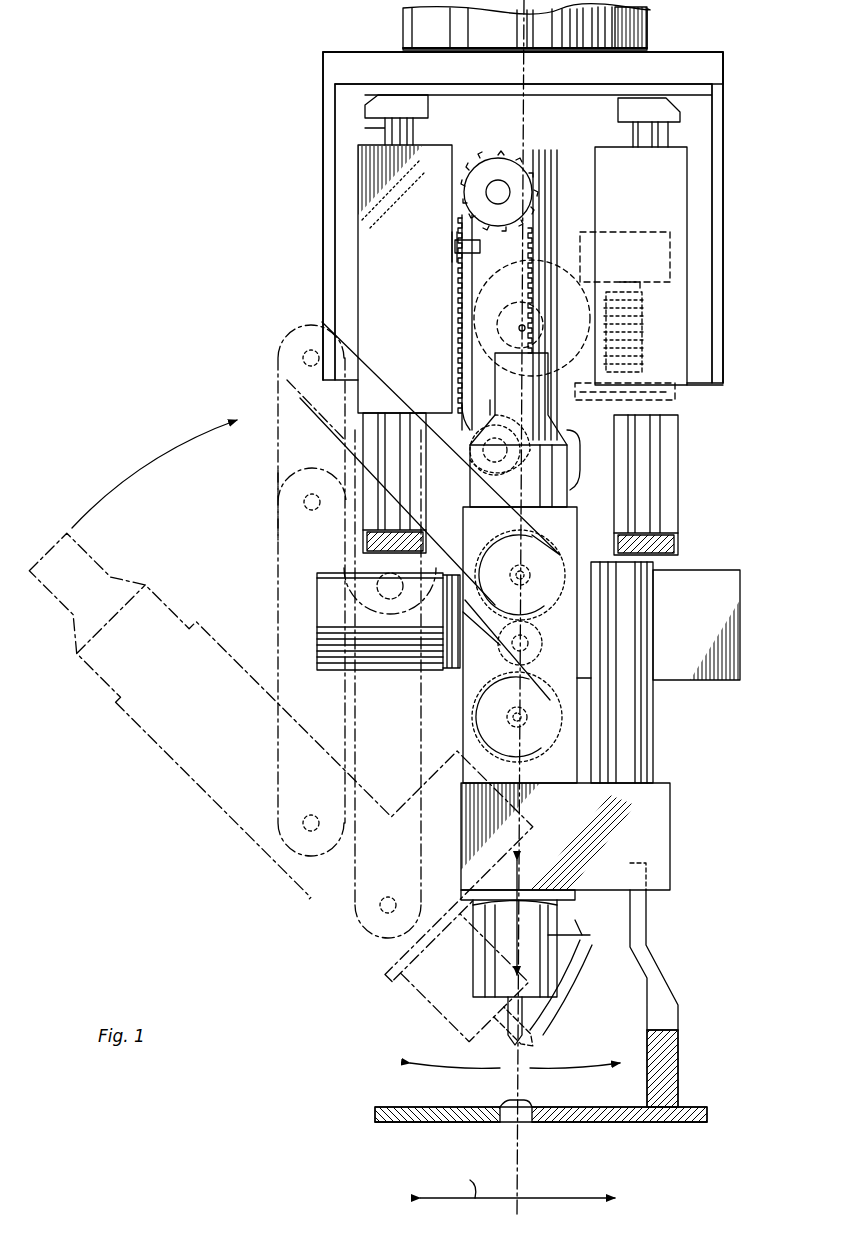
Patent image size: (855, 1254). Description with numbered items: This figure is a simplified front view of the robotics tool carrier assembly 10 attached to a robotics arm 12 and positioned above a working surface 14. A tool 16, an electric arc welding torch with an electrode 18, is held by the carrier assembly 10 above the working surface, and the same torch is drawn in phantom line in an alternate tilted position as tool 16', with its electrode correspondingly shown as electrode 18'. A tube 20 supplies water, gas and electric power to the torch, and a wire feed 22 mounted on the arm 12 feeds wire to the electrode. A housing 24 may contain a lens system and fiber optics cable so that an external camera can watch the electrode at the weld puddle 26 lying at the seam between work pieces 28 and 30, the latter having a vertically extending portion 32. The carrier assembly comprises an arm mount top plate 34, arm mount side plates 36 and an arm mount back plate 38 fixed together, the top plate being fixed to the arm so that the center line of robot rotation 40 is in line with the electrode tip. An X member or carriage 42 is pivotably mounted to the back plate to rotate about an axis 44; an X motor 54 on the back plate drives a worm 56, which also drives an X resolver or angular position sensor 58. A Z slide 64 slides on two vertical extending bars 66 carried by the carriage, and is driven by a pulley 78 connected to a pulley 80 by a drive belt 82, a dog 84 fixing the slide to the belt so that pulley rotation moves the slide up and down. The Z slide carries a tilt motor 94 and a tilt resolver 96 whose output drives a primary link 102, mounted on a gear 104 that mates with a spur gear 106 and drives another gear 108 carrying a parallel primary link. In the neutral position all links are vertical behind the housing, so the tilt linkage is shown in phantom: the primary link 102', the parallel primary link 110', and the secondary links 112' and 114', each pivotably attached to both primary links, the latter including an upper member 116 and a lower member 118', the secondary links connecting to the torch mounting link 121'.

The robotics tool carrier assembly 10 is at (156, 352).
The robotics arm 12 is at (647, 22).
The working surface 14 is at (410, 1107).
The tool 16 is at (586, 822).
The tool in alternate position 16' is at (306, 735).
The electrode 18 is at (550, 988).
The bonding tool in rotated position 18' is at (500, 1033).
The tube 20 is at (650, 722).
The wire feed 22 is at (547, 932).
The housing 24 is at (560, 455).
The weld puddle 26 is at (520, 1103).
The work piece 28 is at (430, 1122).
The work piece 30 is at (615, 1122).
The vertically extending portion 32 is at (638, 930).
The arm mount top plate 34 is at (695, 52).
The arm mount side plates 36 is at (330, 120).
The arm mount back plate 38 is at (700, 393).
The center line of robot rotation 40 is at (518, 1172).
The X member or carriage 42 is at (455, 95).
The axis 44 is at (518, 326).
The X motor 54 is at (690, 258).
The worm 56 is at (650, 330).
The X resolver or angular position sensor 58 is at (690, 418).
The Z slide 64 is at (355, 212).
The vertical extending bars 66 is at (385, 128).
The pulley 78 is at (490, 415).
The pulley 80 is at (490, 165).
The drive belt 82 is at (540, 215).
The dog 84 is at (455, 247).
The tilt motor 94 is at (715, 572).
The tilt resolver 96 is at (320, 630).
The primary link 102 is at (432, 368).
The primary link in tilted position 102' is at (268, 414).
The gear 104 is at (520, 644).
The spur gear 106 is at (537, 640).
The gear 108 is at (460, 735).
The primary link in phantom position 110' is at (256, 511).
The secondary link in phantom position 112' is at (267, 546).
The secondary link in phantom position 114' is at (349, 631).
The upper member 116 is at (430, 511).
The lower pulley rotated 118' is at (322, 917).
The pulley rotated 121' is at (258, 857).